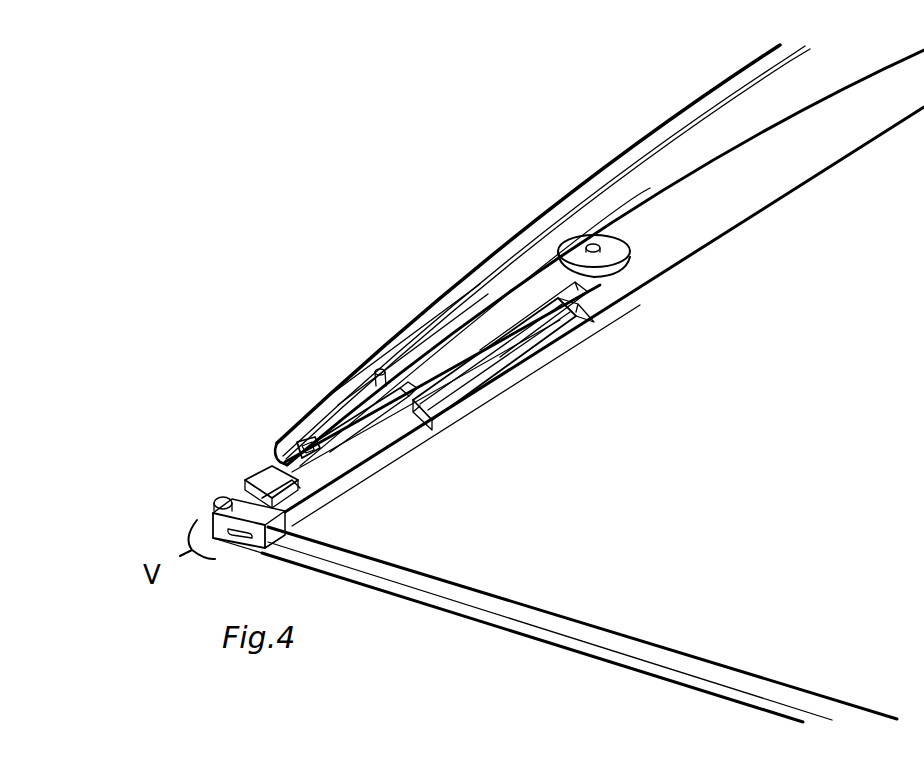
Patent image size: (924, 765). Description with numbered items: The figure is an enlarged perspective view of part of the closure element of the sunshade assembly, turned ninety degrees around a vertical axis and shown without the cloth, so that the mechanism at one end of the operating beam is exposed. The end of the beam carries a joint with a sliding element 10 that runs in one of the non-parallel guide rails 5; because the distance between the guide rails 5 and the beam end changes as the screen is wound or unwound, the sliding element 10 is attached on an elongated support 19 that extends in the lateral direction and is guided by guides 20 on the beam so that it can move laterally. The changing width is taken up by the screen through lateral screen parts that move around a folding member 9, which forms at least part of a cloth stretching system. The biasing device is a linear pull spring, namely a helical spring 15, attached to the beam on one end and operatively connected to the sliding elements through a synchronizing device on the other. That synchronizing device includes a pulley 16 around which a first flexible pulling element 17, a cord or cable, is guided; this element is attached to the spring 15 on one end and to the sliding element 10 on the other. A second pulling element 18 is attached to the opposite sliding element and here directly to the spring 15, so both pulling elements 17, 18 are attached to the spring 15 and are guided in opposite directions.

The guide rail 5 is at (405, 595).
The folding member 9 is at (482, 583).
The sliding element 10 is at (250, 492).
The helical spring 15 is at (463, 385).
The pulley 16 is at (583, 247).
The first flexible pulling element 17 is at (545, 238).
The second pulling element 18 is at (687, 177).
The elongated support 19 is at (323, 447).
The guide 20 is at (447, 318).